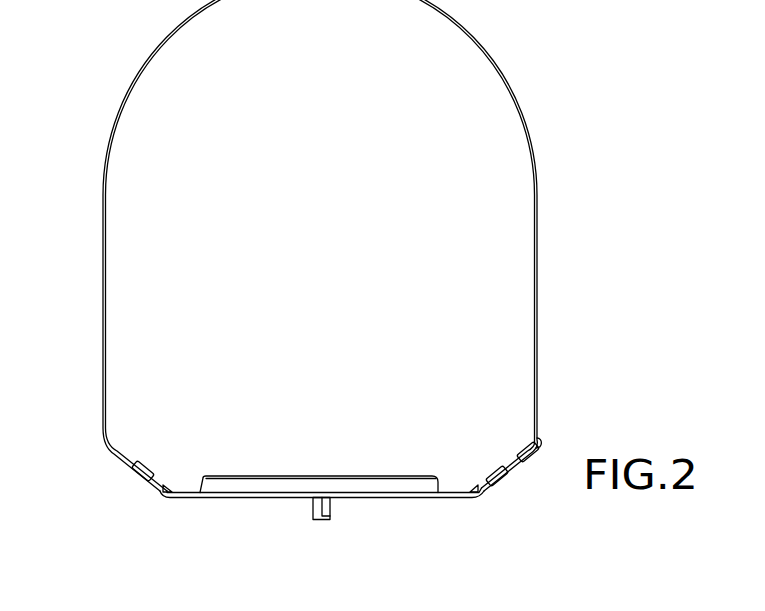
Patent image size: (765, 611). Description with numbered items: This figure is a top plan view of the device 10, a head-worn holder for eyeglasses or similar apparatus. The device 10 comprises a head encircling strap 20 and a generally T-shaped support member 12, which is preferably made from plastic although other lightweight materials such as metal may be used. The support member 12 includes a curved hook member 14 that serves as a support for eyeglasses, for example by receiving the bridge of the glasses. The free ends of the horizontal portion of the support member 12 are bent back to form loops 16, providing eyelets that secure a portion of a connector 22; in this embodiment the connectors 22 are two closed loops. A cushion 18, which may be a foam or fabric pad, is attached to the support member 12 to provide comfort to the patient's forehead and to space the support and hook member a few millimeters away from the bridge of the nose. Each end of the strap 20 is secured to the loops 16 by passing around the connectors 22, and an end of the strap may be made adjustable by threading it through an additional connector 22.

The device 10 is at (575, 230).
The support member 12 is at (293, 500).
The hook member 14 is at (325, 517).
The loops 16 is at (172, 491).
The cushion 18 is at (348, 483).
The head encircling strap 20 is at (522, 110).
The connector 22 is at (157, 485).